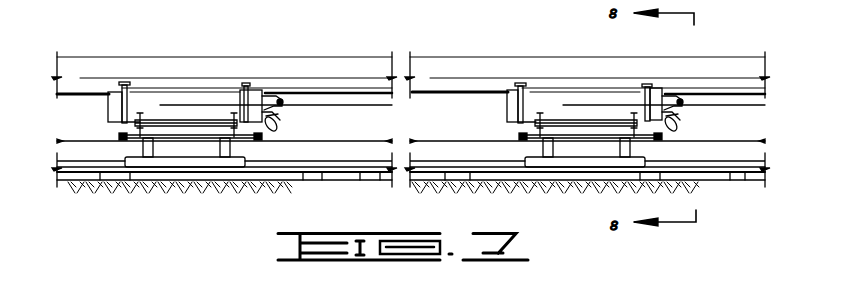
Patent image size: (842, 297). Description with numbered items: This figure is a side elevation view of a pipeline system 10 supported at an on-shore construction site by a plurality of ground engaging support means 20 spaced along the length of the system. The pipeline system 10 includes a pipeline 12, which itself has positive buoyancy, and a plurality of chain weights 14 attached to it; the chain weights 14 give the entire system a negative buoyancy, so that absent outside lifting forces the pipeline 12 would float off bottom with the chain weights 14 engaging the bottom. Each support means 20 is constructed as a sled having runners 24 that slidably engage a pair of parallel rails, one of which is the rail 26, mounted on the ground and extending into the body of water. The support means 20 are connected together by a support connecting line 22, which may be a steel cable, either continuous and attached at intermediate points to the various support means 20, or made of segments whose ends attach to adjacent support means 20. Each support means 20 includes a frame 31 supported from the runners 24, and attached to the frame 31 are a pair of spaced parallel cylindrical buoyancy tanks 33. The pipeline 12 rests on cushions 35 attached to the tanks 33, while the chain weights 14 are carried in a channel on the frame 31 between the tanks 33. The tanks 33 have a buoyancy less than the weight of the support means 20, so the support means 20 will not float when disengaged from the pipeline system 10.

The pipeline system 10 is at (310, 57).
The pipeline 12 is at (308, 55).
The chain weights 14 is at (278, 120).
The ground engaging support means 20 is at (110, 110).
The support connecting line 22 is at (352, 141).
The runners 24 is at (189, 166).
The rail 26 is at (291, 180).
The frame 31 is at (168, 145).
The cylindrical buoyancy tanks 33 is at (163, 100).
The cushions 35 is at (125, 85).